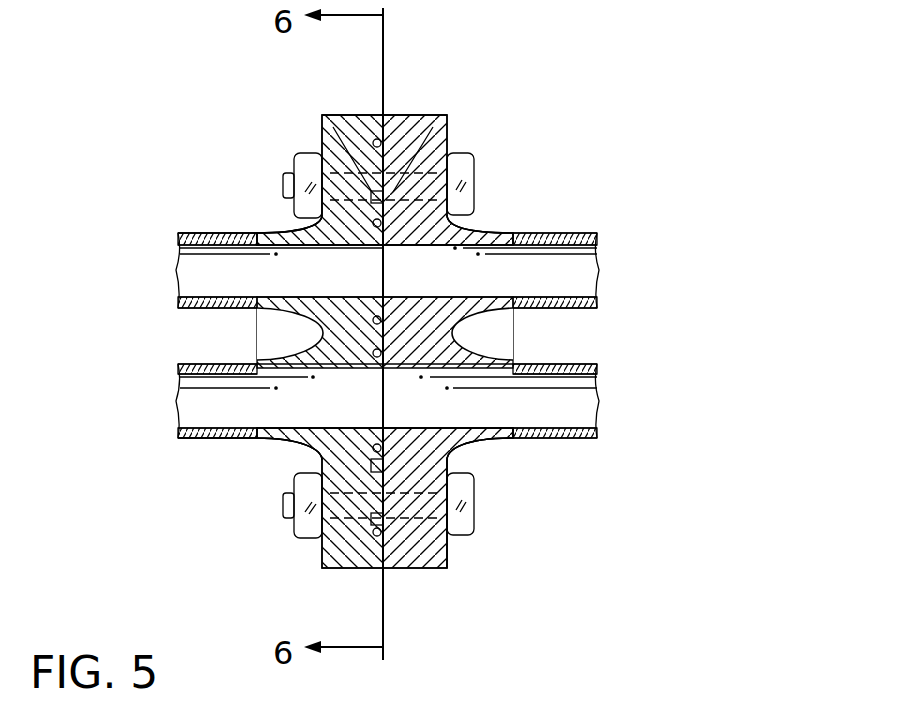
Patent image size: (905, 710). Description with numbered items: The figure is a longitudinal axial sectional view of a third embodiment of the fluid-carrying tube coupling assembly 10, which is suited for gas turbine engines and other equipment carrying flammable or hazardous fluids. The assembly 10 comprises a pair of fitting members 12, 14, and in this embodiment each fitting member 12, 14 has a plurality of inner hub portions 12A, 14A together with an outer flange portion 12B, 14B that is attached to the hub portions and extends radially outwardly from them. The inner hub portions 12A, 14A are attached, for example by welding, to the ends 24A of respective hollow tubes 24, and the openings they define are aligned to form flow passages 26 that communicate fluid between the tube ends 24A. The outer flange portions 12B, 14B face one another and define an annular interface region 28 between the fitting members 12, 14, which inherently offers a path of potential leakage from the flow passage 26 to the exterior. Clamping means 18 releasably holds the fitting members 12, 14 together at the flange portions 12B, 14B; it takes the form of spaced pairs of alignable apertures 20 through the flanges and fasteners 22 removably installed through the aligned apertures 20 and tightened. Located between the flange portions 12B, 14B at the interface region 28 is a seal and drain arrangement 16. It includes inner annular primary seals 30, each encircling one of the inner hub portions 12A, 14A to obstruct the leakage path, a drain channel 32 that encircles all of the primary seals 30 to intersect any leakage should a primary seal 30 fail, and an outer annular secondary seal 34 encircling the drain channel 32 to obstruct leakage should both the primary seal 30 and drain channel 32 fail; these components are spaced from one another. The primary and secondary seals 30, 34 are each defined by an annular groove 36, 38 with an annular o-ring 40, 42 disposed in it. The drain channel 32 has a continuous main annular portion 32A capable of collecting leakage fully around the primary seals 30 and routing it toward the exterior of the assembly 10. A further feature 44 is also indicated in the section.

The tube coupling assembly 10 is at (500, 127).
The fitting member 12 is at (320, 125).
The inner hub portion 12A is at (280, 233).
The outer flange portion 12B is at (322, 140).
The fitting member 14 is at (458, 548).
The inner hub portion 14A is at (409, 332).
The outer flange portion 14B is at (450, 533).
The seal and drain arrangement 16 is at (410, 452).
The clamping means 18 is at (482, 177).
The apertures 20 is at (322, 115).
The fasteners 22 is at (283, 185).
The hollow tubes 24 is at (190, 355).
The tube ends 24A is at (546, 208).
The flow passage 26 is at (372, 247).
The interface region 28 is at (392, 263).
The inner annular primary seal 30 is at (395, 320).
The drain channel 32 is at (405, 135).
The main annular portion 32A is at (372, 143).
The outer annular secondary seal 34 is at (375, 573).
The annular groove 36 is at (372, 222).
The annular groove 38 is at (393, 573).
The annular o-ring 40 is at (410, 184).
The annular o-ring 42 is at (385, 112).
The passage 44 is at (387, 287).